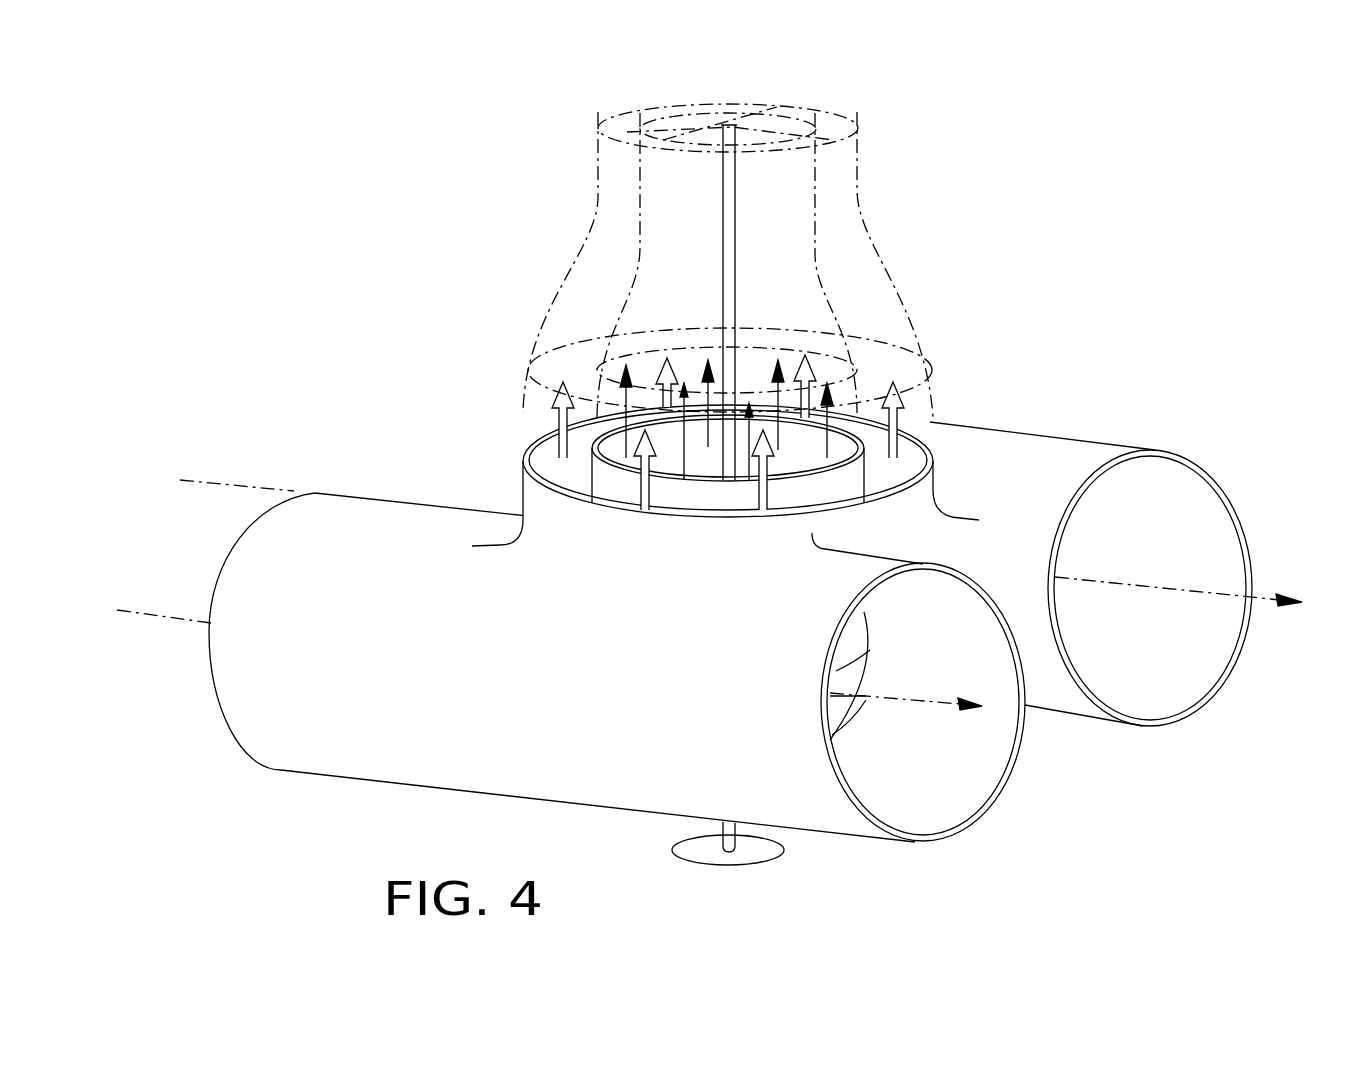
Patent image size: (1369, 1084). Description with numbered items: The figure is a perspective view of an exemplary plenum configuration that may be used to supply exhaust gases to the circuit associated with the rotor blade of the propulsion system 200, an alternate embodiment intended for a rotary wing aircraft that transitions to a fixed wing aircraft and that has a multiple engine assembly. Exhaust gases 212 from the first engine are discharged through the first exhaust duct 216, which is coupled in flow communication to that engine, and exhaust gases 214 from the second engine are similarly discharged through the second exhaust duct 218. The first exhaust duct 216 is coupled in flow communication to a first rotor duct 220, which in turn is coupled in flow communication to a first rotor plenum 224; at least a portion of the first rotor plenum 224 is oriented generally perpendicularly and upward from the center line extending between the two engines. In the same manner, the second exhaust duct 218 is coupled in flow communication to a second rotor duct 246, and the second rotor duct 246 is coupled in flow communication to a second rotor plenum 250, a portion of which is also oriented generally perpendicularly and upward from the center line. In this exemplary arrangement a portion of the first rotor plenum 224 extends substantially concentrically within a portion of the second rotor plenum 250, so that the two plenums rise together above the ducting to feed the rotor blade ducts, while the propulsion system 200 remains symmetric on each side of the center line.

The propulsion system 200 is at (705, 474).
The exhaust gases 212 is at (185, 617).
The exhaust gases 214 is at (246, 482).
The first exhaust duct 216 is at (957, 782).
The second exhaust duct 218 is at (1178, 673).
The first rotor duct 220 is at (265, 708).
The first rotor plenum 224 is at (815, 183).
The second rotor duct 246 is at (456, 443).
The second rotor plenum 250 is at (873, 243).